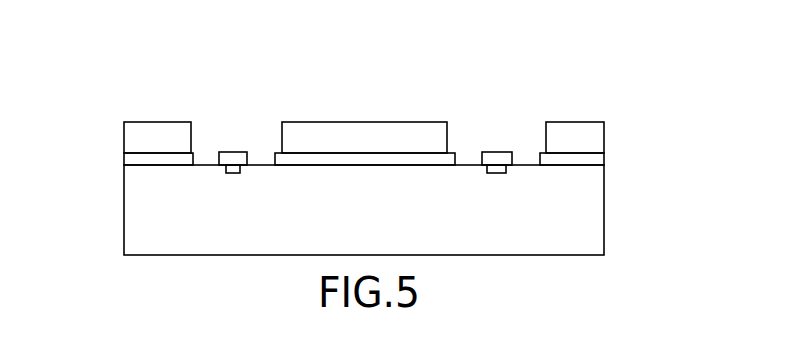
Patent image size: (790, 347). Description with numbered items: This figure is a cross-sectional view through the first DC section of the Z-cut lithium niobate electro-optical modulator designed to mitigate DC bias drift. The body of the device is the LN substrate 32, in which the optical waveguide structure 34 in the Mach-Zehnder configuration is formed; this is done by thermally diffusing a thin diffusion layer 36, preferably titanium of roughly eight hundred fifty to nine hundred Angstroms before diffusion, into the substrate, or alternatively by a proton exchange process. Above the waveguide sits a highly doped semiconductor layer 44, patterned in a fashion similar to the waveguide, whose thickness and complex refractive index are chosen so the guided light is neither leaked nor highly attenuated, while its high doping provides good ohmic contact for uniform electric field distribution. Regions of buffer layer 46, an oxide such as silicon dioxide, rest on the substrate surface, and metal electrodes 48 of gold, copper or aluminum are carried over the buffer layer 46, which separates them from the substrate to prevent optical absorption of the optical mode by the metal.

The LN substrate 32 is at (138, 220).
The optical waveguide structure 34 is at (249, 172).
The thin diffusion layer 36 is at (232, 176).
The highly doped semiconductor layer 44 is at (233, 158).
The buffer layer 46 is at (130, 157).
The electrodes 48 is at (150, 128).